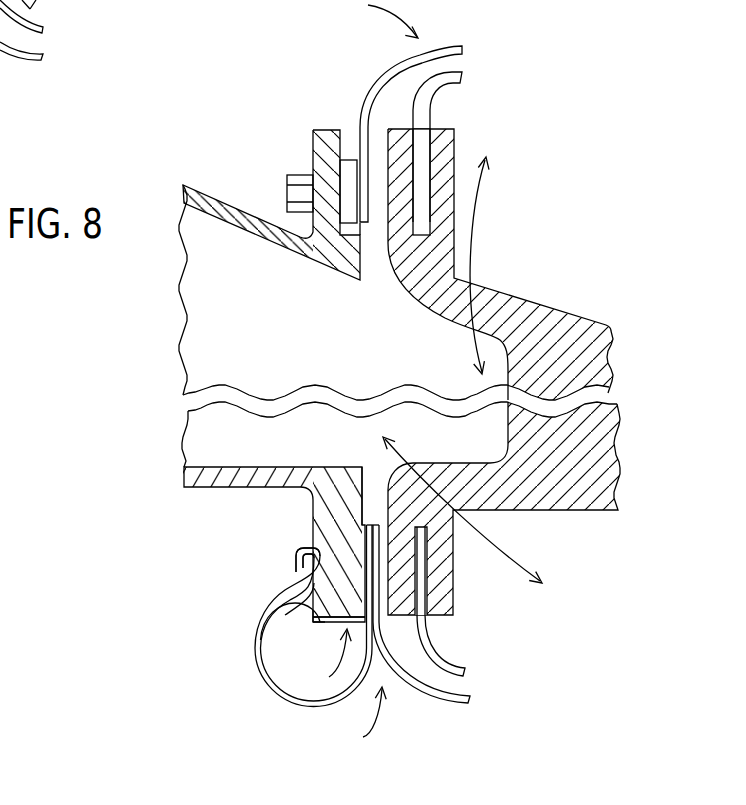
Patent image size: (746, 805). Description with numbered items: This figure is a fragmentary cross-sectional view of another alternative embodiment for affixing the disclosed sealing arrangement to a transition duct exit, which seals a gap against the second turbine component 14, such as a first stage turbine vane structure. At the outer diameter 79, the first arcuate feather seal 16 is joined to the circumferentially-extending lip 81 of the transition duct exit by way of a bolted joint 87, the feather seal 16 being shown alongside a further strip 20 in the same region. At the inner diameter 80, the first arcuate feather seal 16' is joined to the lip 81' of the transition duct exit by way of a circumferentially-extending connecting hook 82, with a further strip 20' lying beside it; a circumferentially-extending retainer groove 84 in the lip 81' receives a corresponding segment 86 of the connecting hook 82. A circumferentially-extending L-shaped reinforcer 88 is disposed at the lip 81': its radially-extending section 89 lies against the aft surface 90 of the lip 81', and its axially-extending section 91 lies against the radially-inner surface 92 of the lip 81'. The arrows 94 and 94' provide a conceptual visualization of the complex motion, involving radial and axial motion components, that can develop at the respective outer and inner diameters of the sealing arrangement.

The second turbine component 14 is at (553, 320).
The first arcuate feather seal 16 is at (394, 132).
The first arcuate feather seal 16' is at (421, 631).
The inner strip 20 is at (457, 147).
The lower inner strip 20' is at (456, 601).
The outer diameter 79 is at (378, 19).
The inner diameter 80 is at (361, 720).
The lip 81 is at (271, 204).
The lip 81' is at (274, 544).
The circumferentially-extending connecting hook 82 is at (258, 672).
The retainer groove 84 is at (323, 555).
The segment of connecting hook 86 is at (296, 566).
The bolted joint 87 is at (350, 139).
The L-shaped reinforcer 88 is at (327, 661).
The radially-extending section 89 is at (363, 600).
The aft surface 90 is at (362, 517).
The axially-extending section 91 is at (325, 622).
The radially-inner surface 92 is at (268, 618).
The arrow 94 is at (507, 265).
The arrow 94' is at (465, 510).